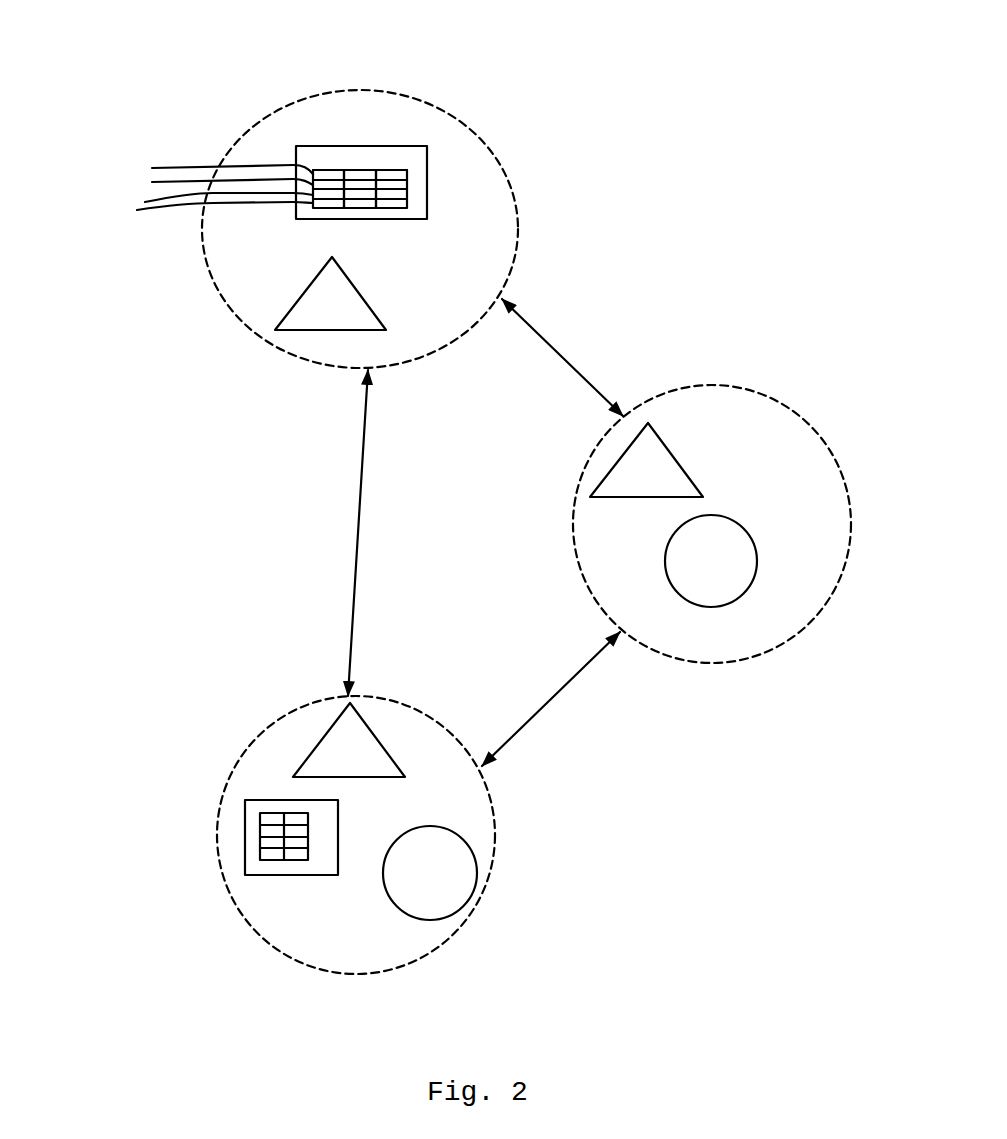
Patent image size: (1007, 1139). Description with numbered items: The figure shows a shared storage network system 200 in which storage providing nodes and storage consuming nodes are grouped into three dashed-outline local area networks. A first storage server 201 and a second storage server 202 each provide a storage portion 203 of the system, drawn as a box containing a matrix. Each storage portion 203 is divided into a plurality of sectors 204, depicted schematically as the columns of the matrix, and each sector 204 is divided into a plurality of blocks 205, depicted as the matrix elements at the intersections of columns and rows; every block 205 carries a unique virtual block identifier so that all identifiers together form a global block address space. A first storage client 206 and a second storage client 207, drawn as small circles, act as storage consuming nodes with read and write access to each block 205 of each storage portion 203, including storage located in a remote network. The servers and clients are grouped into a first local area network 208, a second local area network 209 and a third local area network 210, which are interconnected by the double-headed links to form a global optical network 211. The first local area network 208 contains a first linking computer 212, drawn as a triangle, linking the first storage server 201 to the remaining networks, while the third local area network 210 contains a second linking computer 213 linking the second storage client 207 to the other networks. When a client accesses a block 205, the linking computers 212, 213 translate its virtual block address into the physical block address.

The shared storage network system 200 is at (654, 160).
The first storage server 201 is at (413, 146).
The second storage server 202 is at (250, 875).
The storage portion 203 is at (313, 170).
The sectors 204 is at (393, 170).
The blocks 205 is at (201, 187).
The first storage client 206 is at (478, 877).
The second storage client 207 is at (707, 608).
The first local area network 208 is at (500, 167).
The second local area network 209 is at (450, 940).
The third local area network 210 is at (777, 400).
The global optical network 211 is at (538, 707).
The first linking computer 212 is at (297, 307).
The second linking computer 213 is at (672, 447).